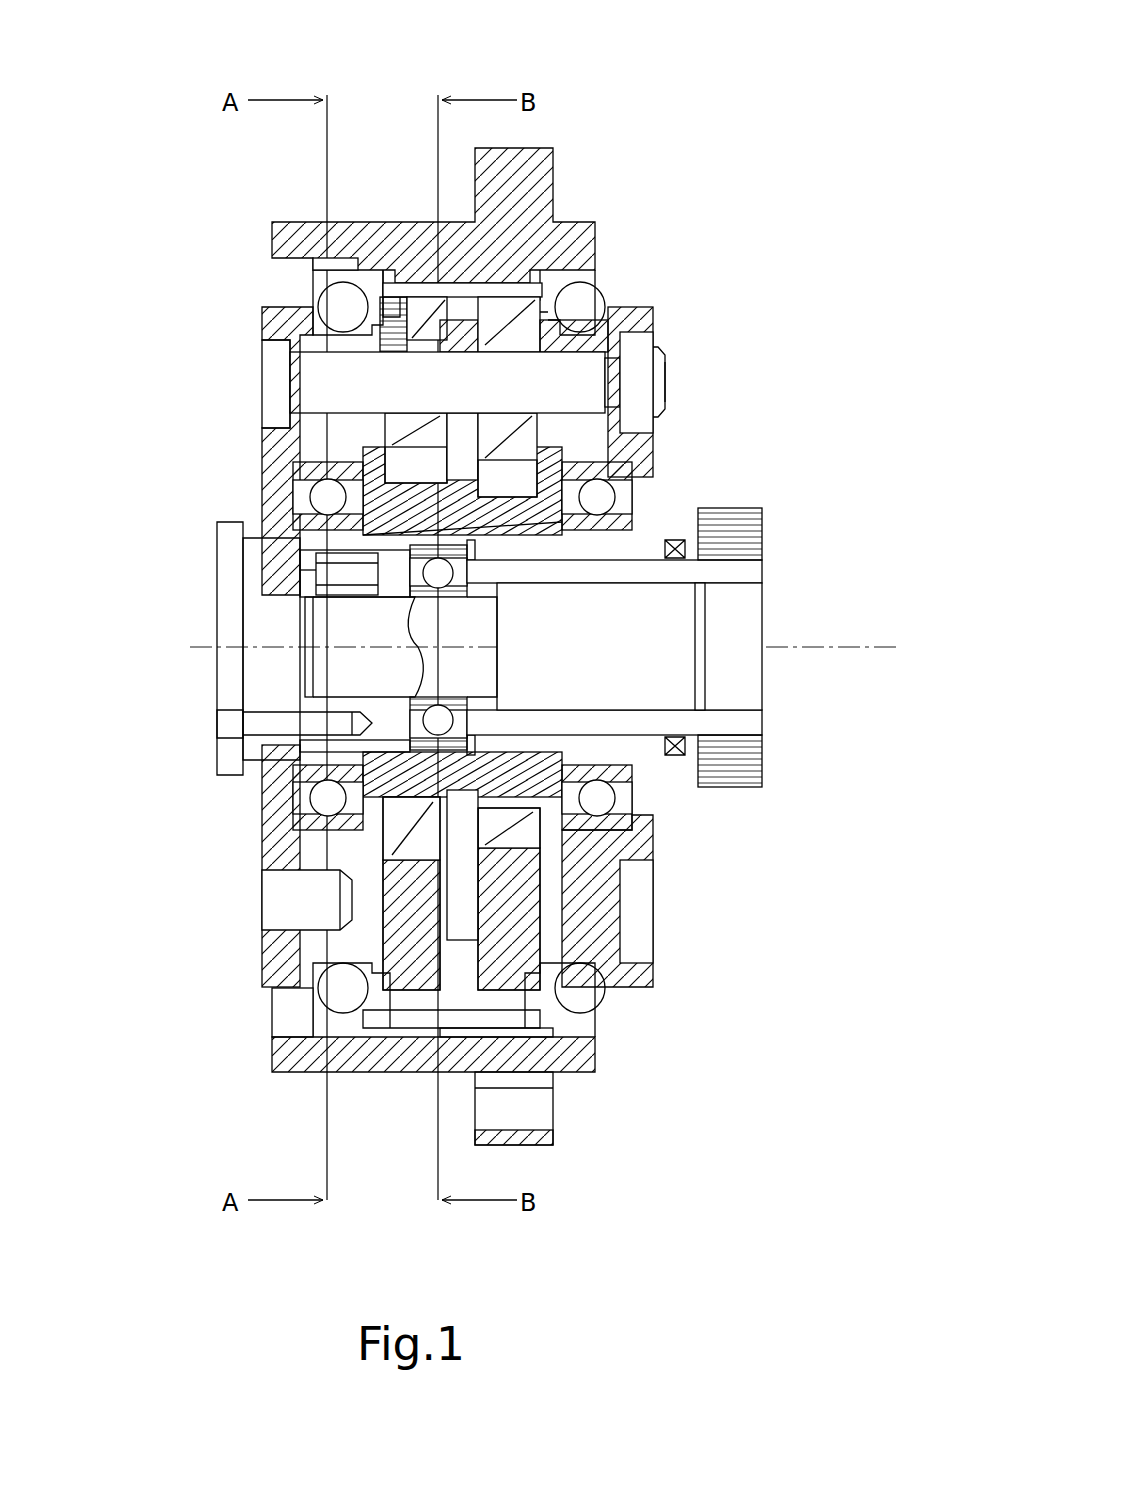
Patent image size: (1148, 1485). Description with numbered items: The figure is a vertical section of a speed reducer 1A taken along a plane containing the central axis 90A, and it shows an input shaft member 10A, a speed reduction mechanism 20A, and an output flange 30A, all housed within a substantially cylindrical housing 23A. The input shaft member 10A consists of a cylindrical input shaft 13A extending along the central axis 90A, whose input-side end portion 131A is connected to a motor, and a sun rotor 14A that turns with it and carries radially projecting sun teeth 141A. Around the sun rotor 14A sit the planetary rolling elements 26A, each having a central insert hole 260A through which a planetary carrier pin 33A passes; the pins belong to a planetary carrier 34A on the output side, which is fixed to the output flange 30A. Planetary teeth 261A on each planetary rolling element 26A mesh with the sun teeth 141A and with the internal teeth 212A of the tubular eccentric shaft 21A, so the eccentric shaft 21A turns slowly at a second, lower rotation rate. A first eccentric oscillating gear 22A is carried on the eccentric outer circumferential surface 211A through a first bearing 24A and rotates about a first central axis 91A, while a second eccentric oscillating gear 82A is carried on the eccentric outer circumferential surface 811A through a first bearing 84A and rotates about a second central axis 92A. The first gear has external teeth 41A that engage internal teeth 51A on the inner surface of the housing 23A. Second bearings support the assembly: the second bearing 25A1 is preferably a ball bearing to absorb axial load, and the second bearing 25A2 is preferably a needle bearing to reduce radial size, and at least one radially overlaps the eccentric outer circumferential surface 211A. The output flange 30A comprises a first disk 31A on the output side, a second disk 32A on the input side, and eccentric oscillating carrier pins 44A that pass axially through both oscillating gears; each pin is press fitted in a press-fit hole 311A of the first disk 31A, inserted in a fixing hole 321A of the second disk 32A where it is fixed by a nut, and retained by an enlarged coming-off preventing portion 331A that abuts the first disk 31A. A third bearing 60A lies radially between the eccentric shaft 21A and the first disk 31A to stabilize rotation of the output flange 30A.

The speed reducer 1A is at (610, 120).
The input shaft member 10A is at (687, 647).
The input shaft 13A is at (715, 577).
The sun rotor 14A is at (600, 610).
The speed reduction mechanism 20A is at (255, 935).
The eccentric shaft 21A is at (520, 820).
The first eccentric oscillating gear 22A is at (345, 1035).
The housing 23A is at (335, 237).
The first bearing 24A is at (305, 900).
The second bearing 25A1 is at (315, 403).
The second bearing 25A2 is at (485, 760).
The planetary rolling element 26A is at (290, 578).
The output flange 30A is at (256, 320).
The first disk 31A is at (295, 845).
The second disk 32A is at (630, 452).
The planetary carrier pin 33A is at (310, 575).
The planetary carrier 34A is at (400, 620).
The external teeth 41A is at (425, 995).
The eccentric oscillating carrier pin 44A is at (558, 387).
The internal teeth 51A is at (495, 1000).
The third bearing 60A is at (330, 470).
The second eccentric oscillating gear 82A is at (510, 943).
The first bearing 84A is at (500, 945).
The central axis 90A is at (632, 648).
The first central axis 91A is at (350, 710).
The second central axis 92A is at (583, 672).
The input-side end portion 131A is at (762, 717).
The sun teeth 141A is at (310, 680).
The eccentric outer circumferential surface 211A is at (420, 770).
The internal teeth 212A is at (415, 812).
The insert hole 260A is at (262, 600).
The planetary teeth 261A is at (305, 615).
The press-fit hole 311A is at (300, 380).
The fixing hole 321A is at (580, 402).
The coming-off preventing portion 331A is at (272, 352).
The eccentric outer circumferential surface 811A is at (580, 768).